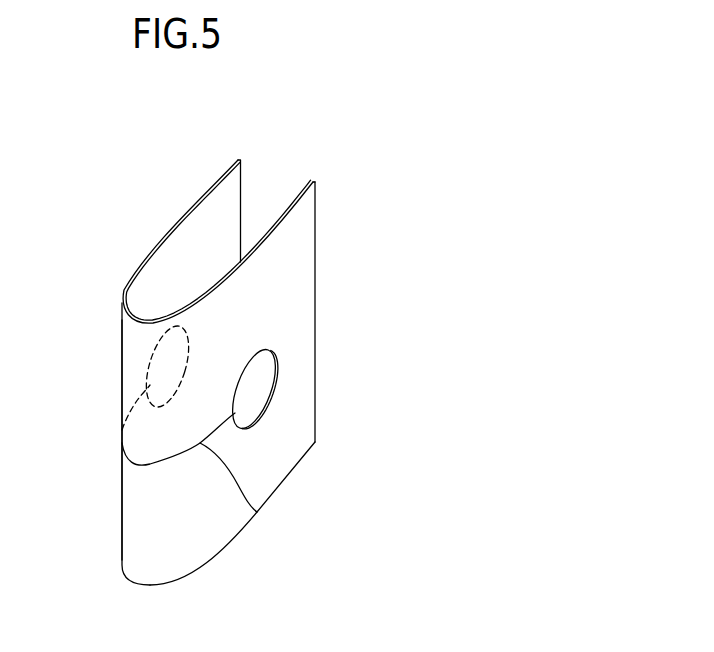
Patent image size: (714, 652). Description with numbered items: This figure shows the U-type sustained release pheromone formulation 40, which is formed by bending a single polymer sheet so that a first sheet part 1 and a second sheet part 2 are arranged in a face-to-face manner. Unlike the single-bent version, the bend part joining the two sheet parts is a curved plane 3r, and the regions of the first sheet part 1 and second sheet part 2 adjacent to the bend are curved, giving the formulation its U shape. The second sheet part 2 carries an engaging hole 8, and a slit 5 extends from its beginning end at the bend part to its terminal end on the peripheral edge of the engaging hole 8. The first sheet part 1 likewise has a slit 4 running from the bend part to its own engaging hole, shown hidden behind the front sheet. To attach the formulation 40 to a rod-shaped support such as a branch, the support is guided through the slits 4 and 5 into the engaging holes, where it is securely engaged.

The U-type sustained release pheromone formulation 40 is at (138, 198).
The first sheet part 1 is at (227, 182).
The second sheet part 2 is at (305, 245).
The curved plane 3r is at (133, 337).
The slit 4 is at (135, 402).
The slit 5 is at (261, 512).
The engaging hole 8 is at (270, 400).